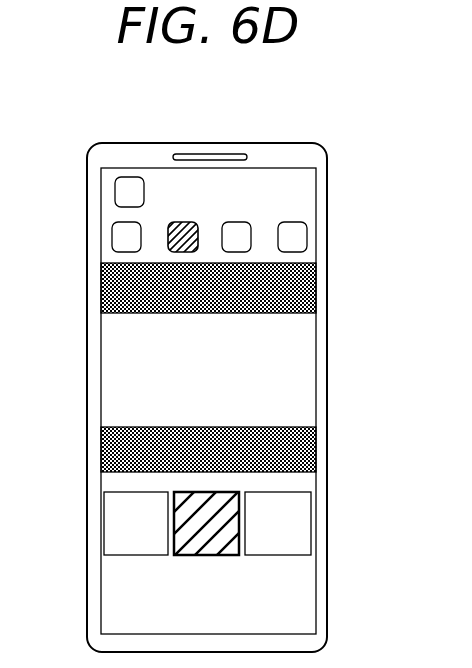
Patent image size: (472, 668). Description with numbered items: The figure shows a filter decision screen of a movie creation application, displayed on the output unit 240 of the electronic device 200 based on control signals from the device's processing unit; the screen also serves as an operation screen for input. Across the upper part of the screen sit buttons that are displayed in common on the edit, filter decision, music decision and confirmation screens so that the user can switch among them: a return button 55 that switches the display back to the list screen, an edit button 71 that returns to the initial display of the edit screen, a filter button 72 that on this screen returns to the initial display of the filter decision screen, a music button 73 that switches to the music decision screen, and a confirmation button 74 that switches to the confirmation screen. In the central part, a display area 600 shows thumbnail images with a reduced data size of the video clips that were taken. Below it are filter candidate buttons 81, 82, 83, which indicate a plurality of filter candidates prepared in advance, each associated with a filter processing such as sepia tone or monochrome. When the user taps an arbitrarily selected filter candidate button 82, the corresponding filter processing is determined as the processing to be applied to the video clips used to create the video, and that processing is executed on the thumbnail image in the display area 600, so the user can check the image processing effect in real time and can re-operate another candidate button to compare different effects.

The electronic device 200 is at (280, 142).
The output unit 240 is at (312, 198).
The display area 600 is at (145, 370).
The return button 55 is at (120, 195).
The edit button 71 is at (122, 239).
The filter button 72 is at (183, 225).
The music button 73 is at (232, 227).
The confirmation button 74 is at (290, 228).
The filter candidate button 81 is at (129, 545).
The filter candidate button 82 is at (205, 545).
The filter candidate button 83 is at (279, 542).